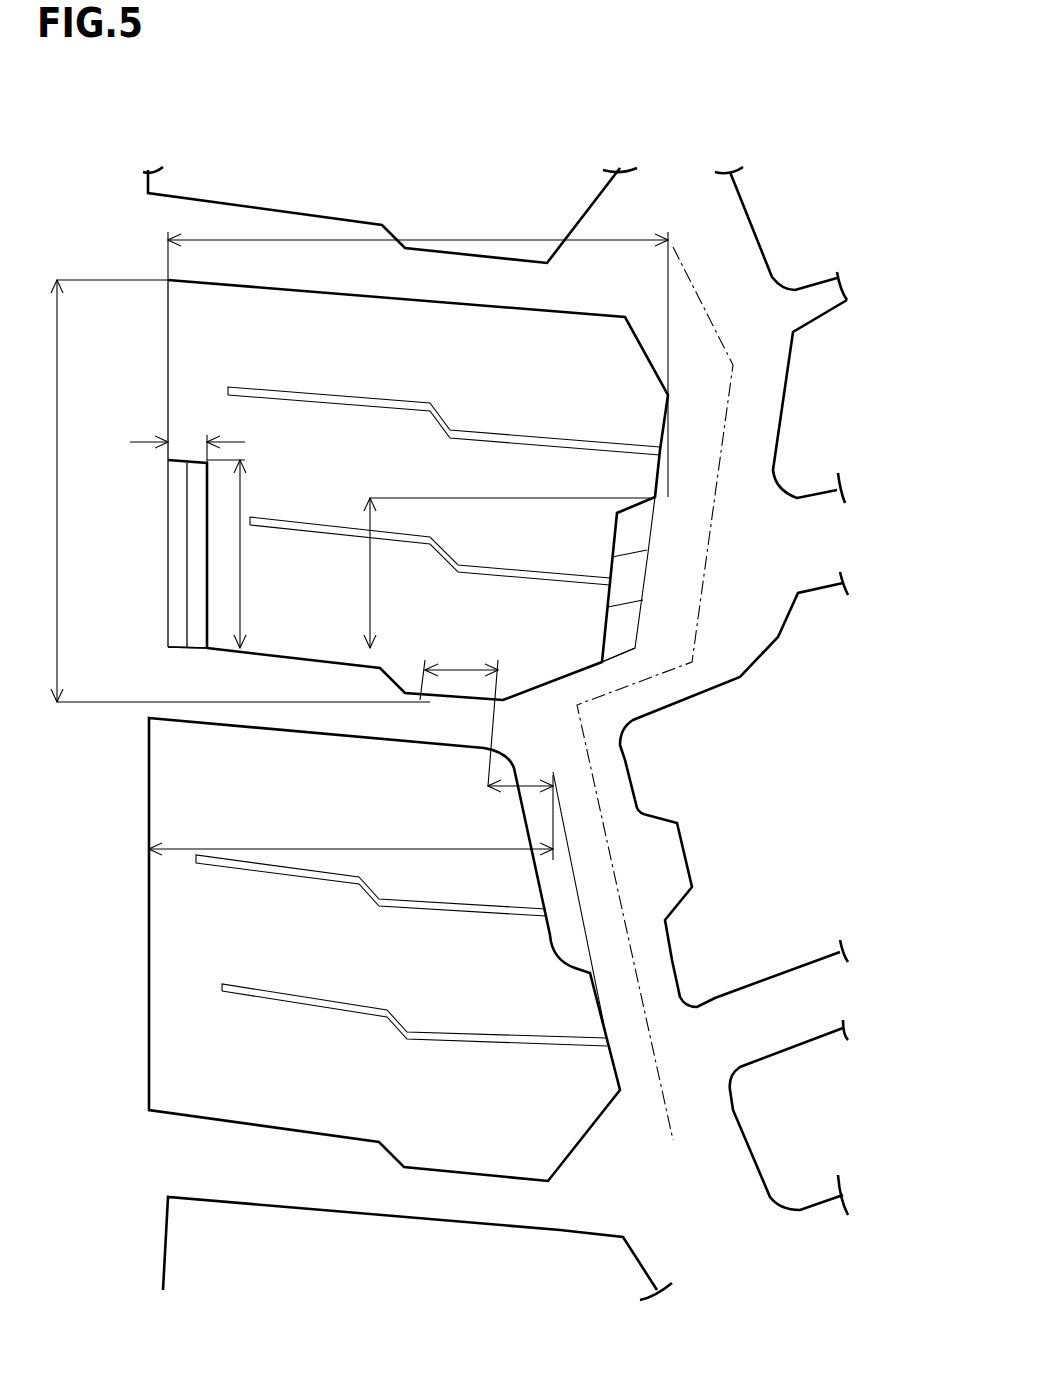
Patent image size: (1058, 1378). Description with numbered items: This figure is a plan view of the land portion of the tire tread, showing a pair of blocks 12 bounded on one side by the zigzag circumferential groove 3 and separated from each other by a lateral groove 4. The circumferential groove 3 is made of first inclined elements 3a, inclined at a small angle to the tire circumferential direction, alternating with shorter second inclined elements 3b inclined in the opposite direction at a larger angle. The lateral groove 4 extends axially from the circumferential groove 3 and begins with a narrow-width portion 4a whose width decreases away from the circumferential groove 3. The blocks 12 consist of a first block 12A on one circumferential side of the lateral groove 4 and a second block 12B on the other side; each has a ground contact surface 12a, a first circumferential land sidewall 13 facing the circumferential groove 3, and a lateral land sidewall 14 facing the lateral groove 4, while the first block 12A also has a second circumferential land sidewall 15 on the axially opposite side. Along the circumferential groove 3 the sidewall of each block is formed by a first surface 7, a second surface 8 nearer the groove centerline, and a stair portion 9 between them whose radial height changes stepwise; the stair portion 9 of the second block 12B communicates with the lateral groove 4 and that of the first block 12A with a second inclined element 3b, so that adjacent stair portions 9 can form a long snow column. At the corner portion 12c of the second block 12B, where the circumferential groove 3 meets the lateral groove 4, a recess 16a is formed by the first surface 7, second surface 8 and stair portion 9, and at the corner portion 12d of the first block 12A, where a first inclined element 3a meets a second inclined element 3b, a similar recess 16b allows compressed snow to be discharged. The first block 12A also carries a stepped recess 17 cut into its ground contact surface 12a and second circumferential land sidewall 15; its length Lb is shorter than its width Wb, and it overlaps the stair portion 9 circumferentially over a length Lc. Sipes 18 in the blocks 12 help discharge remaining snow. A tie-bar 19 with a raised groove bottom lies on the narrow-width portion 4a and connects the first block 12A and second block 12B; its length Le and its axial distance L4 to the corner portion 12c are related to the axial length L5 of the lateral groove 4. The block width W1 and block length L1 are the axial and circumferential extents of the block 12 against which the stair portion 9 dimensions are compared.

The circumferential groove 3 is at (700, 1218).
The first inclined element 3a is at (645, 985).
The second inclined element 3b is at (573, 693).
The lateral groove 4 is at (190, 678).
The narrow-width portion 4a is at (525, 727).
The first surface 7 is at (553, 942).
The second surface 8 is at (567, 933).
The stair portion 9 is at (658, 522).
The block 12 is at (214, 1030).
The first block 12A is at (260, 341).
The second block 12B is at (260, 791).
The ground contact surface 12a is at (563, 357).
The corner portion 12c is at (553, 782).
The corner portion 12d is at (633, 650).
The first circumferential land sidewall 13 is at (647, 352).
The lateral land sidewall 14 is at (250, 653).
The second circumferential land sidewall 15 is at (168, 320).
The recess 16a is at (532, 758).
The recess 16b is at (648, 613).
The recess 17 is at (177, 550).
The sipe 18 is at (300, 397).
The tie-bar 19 is at (452, 728).
The width of the block W1 is at (430, 237).
The length of the block L1 is at (225, 491).
The length of the recess Lb is at (188, 442).
The width of the recess Wb is at (240, 500).
The overlap length Lc is at (487, 573).
The length of the tie-bar Le is at (459, 709).
The distance from tie-bar to corner portion L4 is at (553, 784).
The length of the lateral groove L5 is at (351, 830).